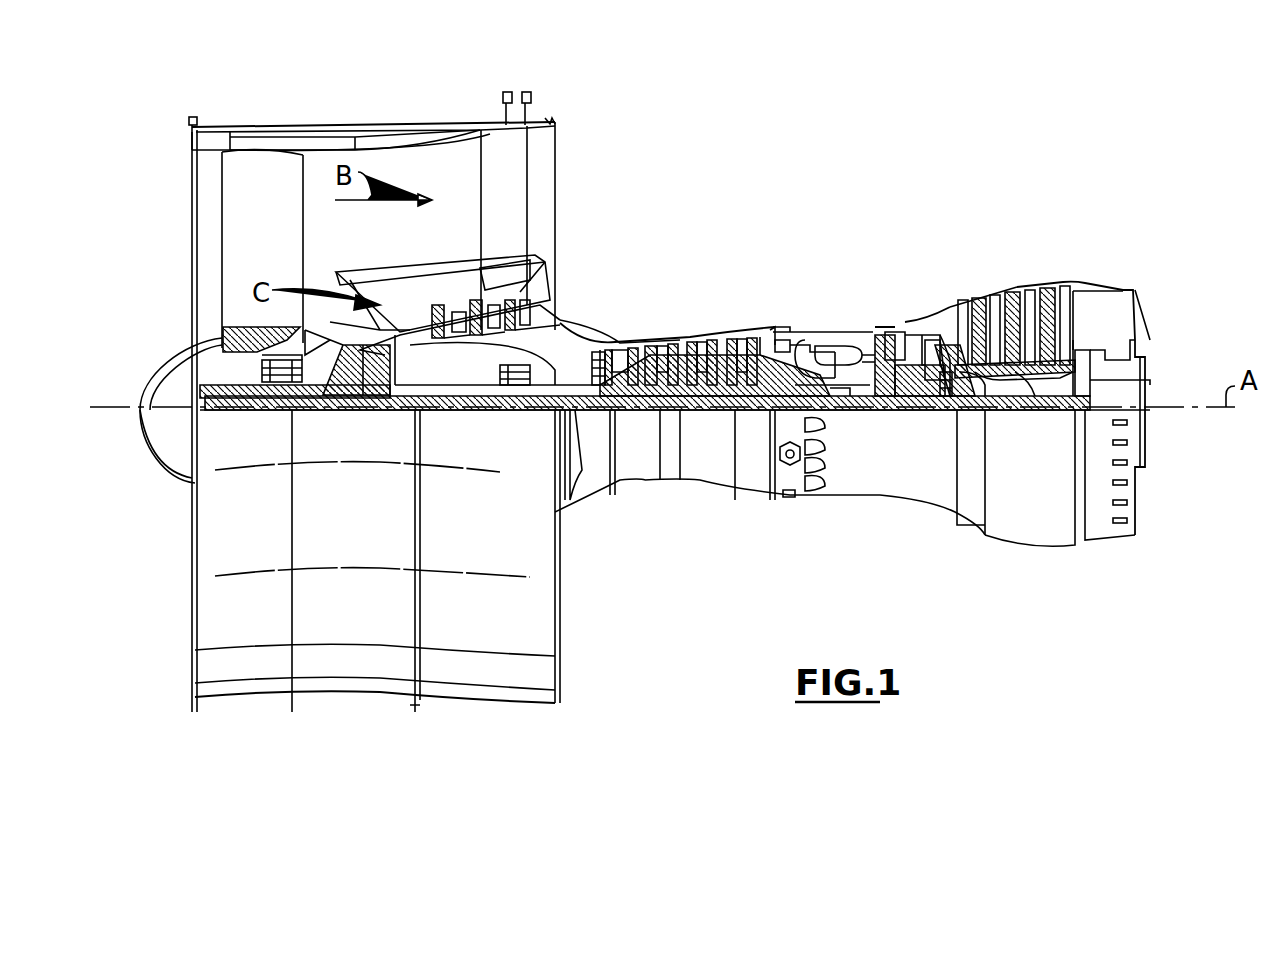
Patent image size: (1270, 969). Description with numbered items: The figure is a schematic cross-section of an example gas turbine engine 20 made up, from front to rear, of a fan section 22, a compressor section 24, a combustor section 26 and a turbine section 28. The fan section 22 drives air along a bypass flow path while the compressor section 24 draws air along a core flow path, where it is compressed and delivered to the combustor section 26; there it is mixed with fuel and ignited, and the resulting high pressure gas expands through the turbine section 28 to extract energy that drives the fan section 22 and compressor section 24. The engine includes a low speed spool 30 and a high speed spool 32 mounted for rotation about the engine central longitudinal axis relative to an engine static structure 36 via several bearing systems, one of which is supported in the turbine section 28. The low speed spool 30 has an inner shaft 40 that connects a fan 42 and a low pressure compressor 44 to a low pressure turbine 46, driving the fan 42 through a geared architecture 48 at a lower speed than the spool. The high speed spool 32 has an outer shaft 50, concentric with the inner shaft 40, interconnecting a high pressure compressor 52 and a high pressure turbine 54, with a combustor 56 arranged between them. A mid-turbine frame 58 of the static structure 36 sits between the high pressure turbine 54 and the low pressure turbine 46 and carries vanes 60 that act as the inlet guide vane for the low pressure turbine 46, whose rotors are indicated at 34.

The gas turbine engine 20 is at (846, 155).
The fan section 22 is at (398, 100).
The compressor section 24 is at (413, 245).
The combustor section 26 is at (865, 245).
The turbine section 28 is at (1088, 245).
The low speed spool 30 is at (706, 436).
The high speed spool 32 is at (753, 367).
The turbine rotors 34 is at (1020, 380).
The engine static structure 36 is at (749, 518).
The inner shaft 40 is at (580, 490).
The fan 42 is at (321, 431).
The low pressure compressor section 44 is at (494, 312).
The low pressure turbine section 46 is at (1020, 292).
The geared architecture 48 is at (378, 395).
The outer shaft 50 is at (835, 398).
The high pressure compressor section 52 is at (683, 375).
The high pressure turbine section 54 is at (893, 330).
The combustor 56 is at (833, 352).
The mid-turbine frame 58 is at (944, 312).
The vanes 60 is at (975, 378).